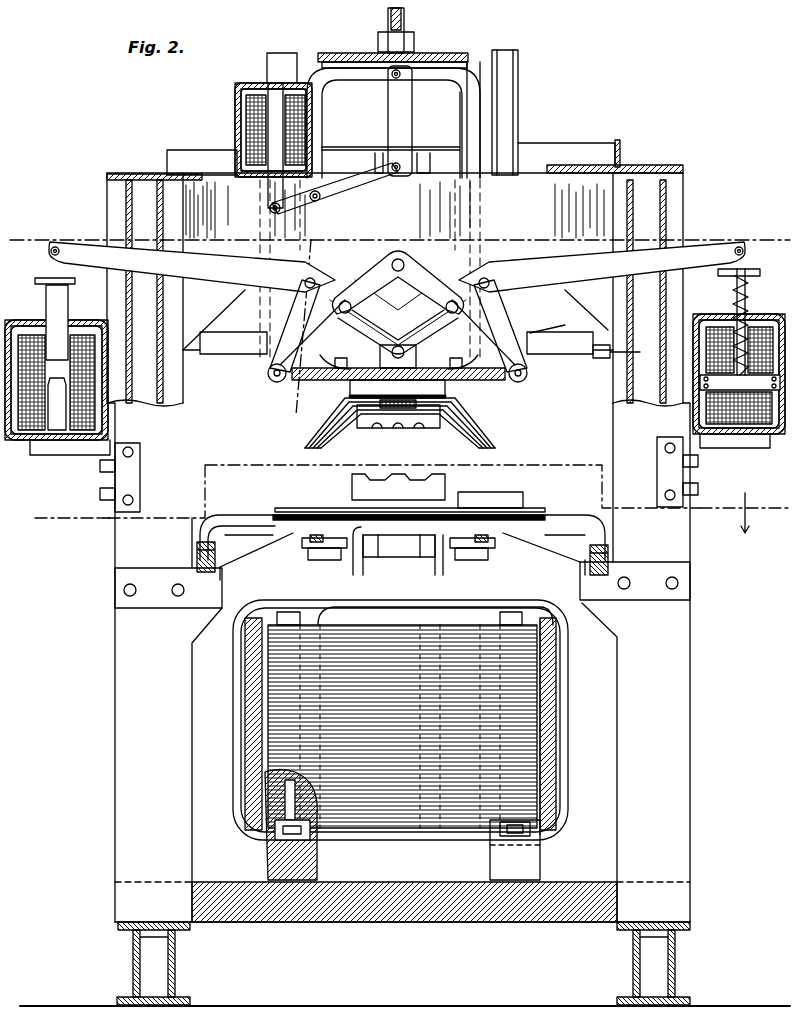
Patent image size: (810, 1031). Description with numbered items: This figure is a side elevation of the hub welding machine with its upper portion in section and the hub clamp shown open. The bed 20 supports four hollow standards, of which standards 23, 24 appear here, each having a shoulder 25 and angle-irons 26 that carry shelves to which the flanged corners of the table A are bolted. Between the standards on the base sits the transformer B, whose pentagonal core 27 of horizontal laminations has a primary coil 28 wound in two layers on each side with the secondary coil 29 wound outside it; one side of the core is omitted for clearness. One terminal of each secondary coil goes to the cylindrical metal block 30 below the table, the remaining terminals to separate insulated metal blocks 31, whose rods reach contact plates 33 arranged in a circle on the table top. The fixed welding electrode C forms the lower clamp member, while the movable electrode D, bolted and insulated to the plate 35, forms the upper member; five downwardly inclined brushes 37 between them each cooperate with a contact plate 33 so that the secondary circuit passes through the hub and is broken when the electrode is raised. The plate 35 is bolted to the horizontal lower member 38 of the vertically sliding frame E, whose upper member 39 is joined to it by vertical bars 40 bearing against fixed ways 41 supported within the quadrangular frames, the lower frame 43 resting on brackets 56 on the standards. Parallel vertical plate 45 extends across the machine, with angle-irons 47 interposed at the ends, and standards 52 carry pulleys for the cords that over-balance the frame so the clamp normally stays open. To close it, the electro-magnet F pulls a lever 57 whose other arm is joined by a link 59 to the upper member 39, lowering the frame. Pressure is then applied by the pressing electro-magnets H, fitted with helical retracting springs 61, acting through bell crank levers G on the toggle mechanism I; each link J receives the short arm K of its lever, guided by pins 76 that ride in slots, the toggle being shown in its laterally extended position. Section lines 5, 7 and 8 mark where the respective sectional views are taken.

The standard 52 is at (382, 46).
The upper member of sliding frame 39 is at (393, 48).
The vertical bar 40 is at (495, 43).
The fixed way 41 is at (520, 124).
The link 59 is at (392, 117).
The vertically sliding frame E is at (458, 127).
The electro-magnet F is at (236, 107).
The angle-iron 47 is at (202, 162).
The vertical plate 45 is at (395, 262).
The lever 57 is at (334, 192).
The section line 8 8 is at (300, 327).
The section line 7 7 is at (399, 239).
The bell crank lever G is at (397, 296).
The helical retracting spring 61 is at (734, 296).
The pressing electro-magnet H is at (395, 395).
The short arm of bell crank lever K is at (300, 300).
The toggle mechanism I is at (398, 309).
The pin 76 is at (551, 321).
The lower quadrangular frame 43 is at (398, 343).
The link J is at (268, 378).
The lower member of sliding frame 38 is at (398, 378).
The plate 35 is at (446, 392).
The bracket 56 is at (622, 362).
The brush 37 is at (490, 436).
The movable electrode D is at (432, 430).
The fixed welding electrode C is at (448, 482).
The contact plate 33 is at (505, 490).
The table A is at (400, 522).
The section line 5 5 is at (412, 513).
The angle-iron 26 is at (115, 597).
The shoulder 25 is at (598, 603).
The metal block 31 is at (398, 554).
The cylindrical metal block 30 is at (399, 561).
The pentagonal core 27 is at (520, 690).
The primary coil 28 is at (550, 715).
The secondary coil 29 is at (560, 760).
The hollow standard 23 is at (168, 720).
The transformer B is at (228, 734).
The hollow standard 24 is at (636, 662).
The bed 20 is at (405, 944).